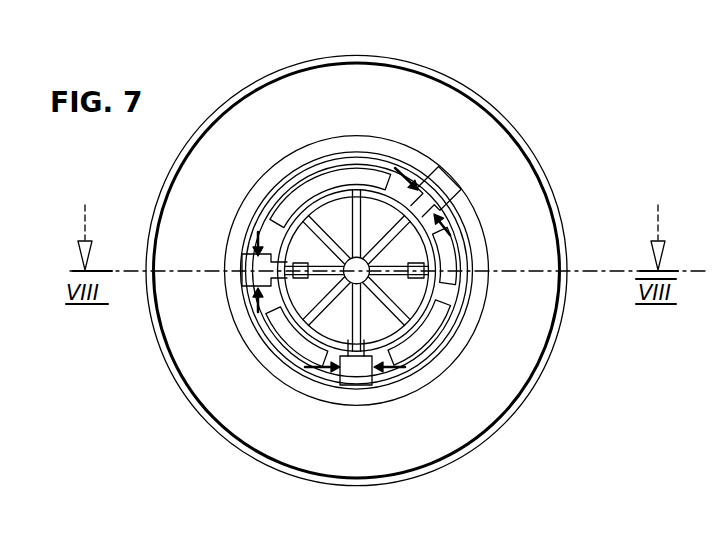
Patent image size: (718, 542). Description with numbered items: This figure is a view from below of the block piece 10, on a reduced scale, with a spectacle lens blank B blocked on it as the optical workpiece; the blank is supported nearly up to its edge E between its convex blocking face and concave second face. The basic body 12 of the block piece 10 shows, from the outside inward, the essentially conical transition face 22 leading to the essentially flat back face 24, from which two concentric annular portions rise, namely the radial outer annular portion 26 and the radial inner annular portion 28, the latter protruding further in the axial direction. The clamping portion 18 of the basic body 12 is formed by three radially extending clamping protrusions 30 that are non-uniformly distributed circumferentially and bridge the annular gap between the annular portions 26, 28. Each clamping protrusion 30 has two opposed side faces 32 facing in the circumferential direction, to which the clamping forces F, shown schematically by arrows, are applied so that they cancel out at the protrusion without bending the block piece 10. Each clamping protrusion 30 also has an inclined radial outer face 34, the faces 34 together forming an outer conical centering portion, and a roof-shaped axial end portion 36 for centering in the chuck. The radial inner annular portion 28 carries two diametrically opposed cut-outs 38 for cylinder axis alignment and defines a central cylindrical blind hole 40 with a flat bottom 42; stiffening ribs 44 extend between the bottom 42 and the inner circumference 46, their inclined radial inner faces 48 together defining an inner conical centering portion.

The block piece 10 is at (550, 188).
The basic body 12 is at (236, 413).
The clamping portion 18 is at (440, 190).
The transition face 22 is at (391, 444).
The back face 24 is at (258, 250).
The radial outer annular portion 26 is at (264, 224).
The radial inner annular portion 28 is at (278, 212).
The clamping protrusion 30 is at (372, 166).
The side face 32 is at (353, 330).
The radial outer face 34 is at (456, 206).
The axial end portion 36 is at (472, 246).
The cut-out 38 is at (292, 206).
The central cylindrical blind hole 40 is at (312, 200).
The bottom 42 is at (352, 210).
The stiffening rib 44 is at (308, 261).
The inner circumference 46 is at (452, 282).
The radial inner face 48 is at (409, 272).
The edge E is at (452, 66).
The spectacle lens blank B is at (548, 140).
The clamping forces F is at (430, 182).